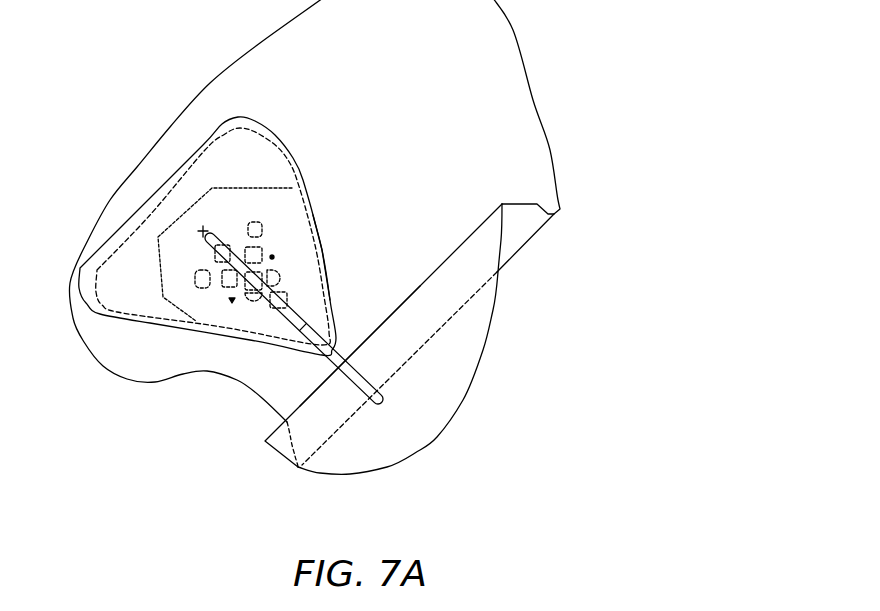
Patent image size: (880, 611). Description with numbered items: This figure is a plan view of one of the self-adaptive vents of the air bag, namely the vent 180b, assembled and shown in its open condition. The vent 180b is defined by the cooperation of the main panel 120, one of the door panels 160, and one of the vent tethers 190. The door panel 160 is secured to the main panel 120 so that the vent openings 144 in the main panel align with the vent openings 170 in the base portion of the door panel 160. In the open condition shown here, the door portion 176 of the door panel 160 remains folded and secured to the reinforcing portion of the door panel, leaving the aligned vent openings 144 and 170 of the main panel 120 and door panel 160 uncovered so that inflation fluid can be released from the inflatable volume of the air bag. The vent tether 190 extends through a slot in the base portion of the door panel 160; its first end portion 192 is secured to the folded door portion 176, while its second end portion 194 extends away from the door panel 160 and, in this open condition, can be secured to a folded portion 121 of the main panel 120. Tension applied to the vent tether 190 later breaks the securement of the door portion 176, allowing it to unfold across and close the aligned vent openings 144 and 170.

The main panel 120 is at (492, 60).
The folded portion 121 is at (280, 445).
The door panel 160 is at (233, 152).
The door portion 176 is at (93, 367).
The self-adaptive vent 180b is at (325, 240).
The first end portion 192 is at (192, 224).
The vent openings 144 is at (225, 308).
The base portion / vent openings 170 is at (201, 300).
The vent tether 190 is at (353, 393).
The second end portion 194 is at (398, 411).